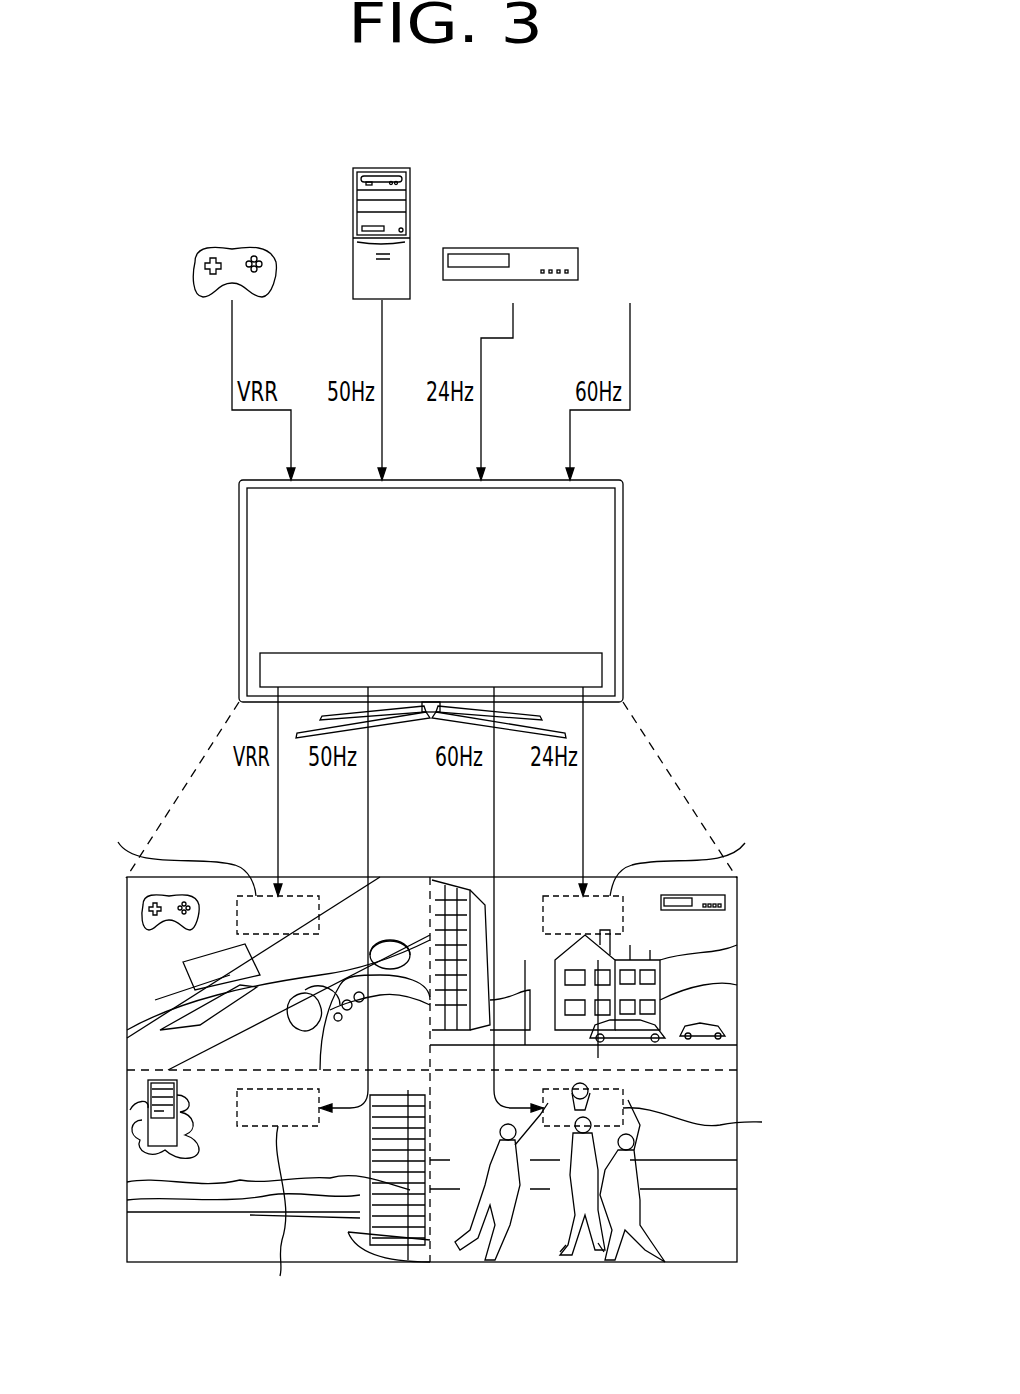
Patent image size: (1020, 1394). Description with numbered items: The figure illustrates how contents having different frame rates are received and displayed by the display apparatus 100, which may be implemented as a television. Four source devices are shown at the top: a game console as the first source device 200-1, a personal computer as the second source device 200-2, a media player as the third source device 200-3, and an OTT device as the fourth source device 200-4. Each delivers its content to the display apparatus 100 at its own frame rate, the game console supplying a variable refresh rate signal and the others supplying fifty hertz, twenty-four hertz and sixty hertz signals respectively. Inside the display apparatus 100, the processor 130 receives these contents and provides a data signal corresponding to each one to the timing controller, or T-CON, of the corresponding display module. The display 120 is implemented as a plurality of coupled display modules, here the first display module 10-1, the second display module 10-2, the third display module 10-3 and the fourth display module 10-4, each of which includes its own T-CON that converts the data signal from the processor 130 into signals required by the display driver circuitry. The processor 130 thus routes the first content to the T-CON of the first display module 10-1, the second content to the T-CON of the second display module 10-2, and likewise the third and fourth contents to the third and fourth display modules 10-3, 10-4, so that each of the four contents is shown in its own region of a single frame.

The first source device 200-1 is at (250, 241).
The second source device 200-2 is at (382, 167).
The third source device 200-3 is at (510, 246).
The fourth source device 200-4 is at (628, 272).
The display apparatus 100 is at (623, 566).
The processor 130 is at (602, 672).
The display 120 is at (413, 877).
The first display module 10-1 is at (140, 957).
The second display module 10-2 is at (140, 1157).
The third display module 10-3 is at (718, 987).
The fourth display module 10-4 is at (718, 1196).